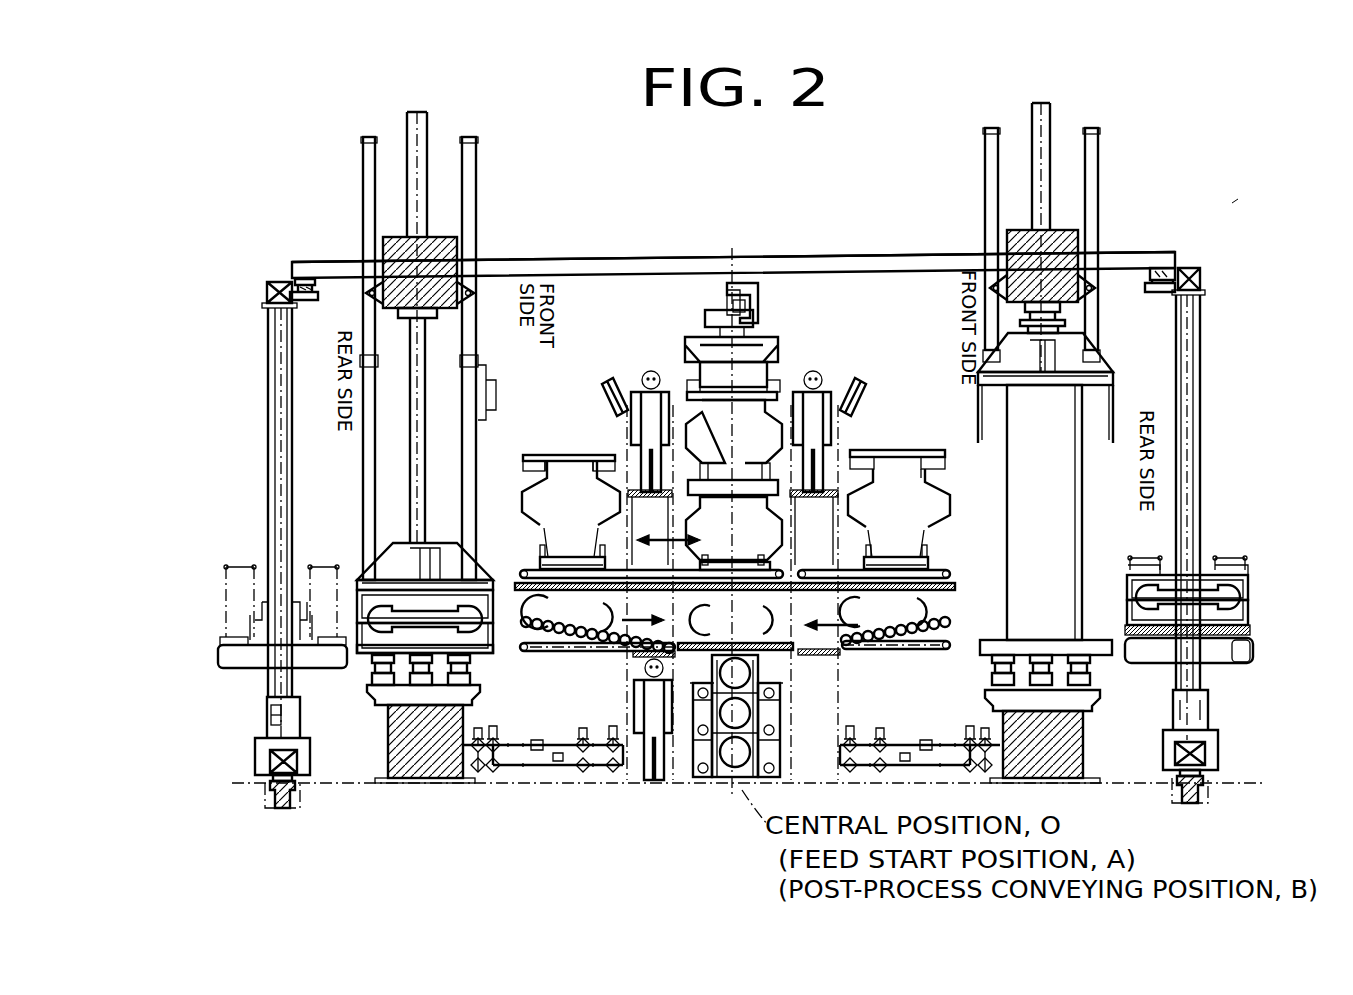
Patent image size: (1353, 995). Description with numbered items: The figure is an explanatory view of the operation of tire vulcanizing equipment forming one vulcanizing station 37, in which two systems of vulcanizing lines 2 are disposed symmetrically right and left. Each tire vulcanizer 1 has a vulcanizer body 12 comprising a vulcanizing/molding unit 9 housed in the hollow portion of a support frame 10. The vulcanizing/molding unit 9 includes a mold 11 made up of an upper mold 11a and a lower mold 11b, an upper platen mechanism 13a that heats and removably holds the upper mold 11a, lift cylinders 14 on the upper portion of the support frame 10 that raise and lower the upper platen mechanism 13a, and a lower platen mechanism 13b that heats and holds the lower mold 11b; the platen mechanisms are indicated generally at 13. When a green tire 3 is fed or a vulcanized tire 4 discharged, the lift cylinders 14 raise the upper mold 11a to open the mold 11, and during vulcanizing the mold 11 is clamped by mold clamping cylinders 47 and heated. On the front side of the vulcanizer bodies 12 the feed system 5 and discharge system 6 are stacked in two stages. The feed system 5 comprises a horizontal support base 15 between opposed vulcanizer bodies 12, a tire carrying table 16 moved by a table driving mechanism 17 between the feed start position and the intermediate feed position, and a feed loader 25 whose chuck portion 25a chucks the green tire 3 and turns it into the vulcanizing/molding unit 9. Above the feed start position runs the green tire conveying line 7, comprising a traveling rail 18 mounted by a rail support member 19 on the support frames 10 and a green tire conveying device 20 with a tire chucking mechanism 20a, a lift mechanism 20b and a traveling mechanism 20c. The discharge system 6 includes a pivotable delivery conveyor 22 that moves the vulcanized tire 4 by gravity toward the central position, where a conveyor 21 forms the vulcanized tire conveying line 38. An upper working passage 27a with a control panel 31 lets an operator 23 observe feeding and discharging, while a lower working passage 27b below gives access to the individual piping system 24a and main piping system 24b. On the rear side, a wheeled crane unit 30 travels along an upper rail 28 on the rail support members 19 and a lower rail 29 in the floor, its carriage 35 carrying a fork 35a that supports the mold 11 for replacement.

The tire vulcanizer 1 is at (512, 191).
The vulcanizing line 2 is at (1165, 192).
The green tire 3 is at (522, 505).
The vulcanized tire 4 is at (530, 612).
The feed system 5 is at (960, 573).
The discharge system 6 is at (958, 635).
The green tire conveying line 7 is at (760, 284).
The vulcanizing/molding unit 9 is at (348, 462).
The support frame 10 is at (392, 268).
The mold 11 is at (213, 508).
The upper mold 11a is at (366, 602).
The lower mold 11b is at (366, 634).
The vulcanizer body 12 is at (222, 345).
The press cylinder 13 is at (494, 378).
The upper platen mechanism 13a is at (360, 580).
The lower platen mechanism 13b is at (365, 683).
The lift cylinders 14 is at (363, 203).
The horizontal support base 15 is at (957, 586).
The tire carrying table 16 is at (545, 556).
The table driving mechanism 17 is at (535, 574).
The traveling rail 18 is at (758, 302).
The rail support member 19 is at (884, 262).
The green tire conveying device 20 is at (608, 288).
The tire chucking mechanism 20a is at (700, 375).
The lift mechanism 20b is at (700, 350).
The traveling mechanism 20c is at (705, 316).
The conveyor 21 is at (780, 650).
The delivery conveyor 22 is at (640, 648).
The operator 23 is at (815, 372).
The individual piping system 24a is at (536, 774).
The main piping system 24b is at (720, 778).
The feed loader 25 is at (522, 447).
The chuck portion 25a is at (526, 456).
The upper working passage 27a is at (770, 470).
The lower working passage 27b is at (690, 778).
The upper rail 28 is at (300, 282).
The lower rail 29 is at (296, 806).
The wheeled crane unit 30 is at (266, 459).
The control panel 31 is at (608, 385).
The carriage 35 is at (236, 660).
The fork 35a is at (1228, 640).
The vulcanizing station 37 is at (1232, 203).
The vulcanized tire conveying line 38 is at (770, 663).
The mold clamping cylinders 47 is at (386, 698).